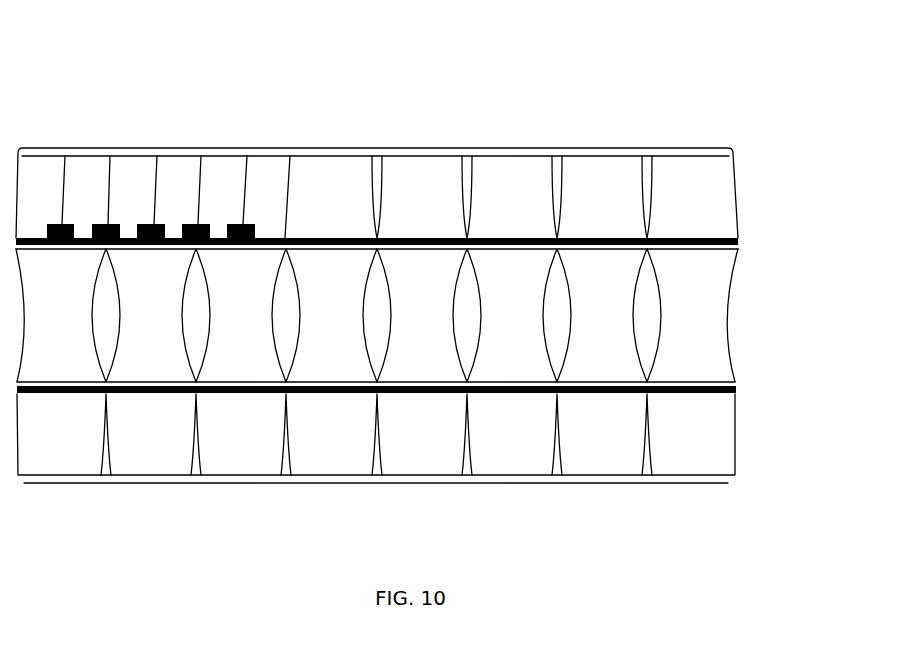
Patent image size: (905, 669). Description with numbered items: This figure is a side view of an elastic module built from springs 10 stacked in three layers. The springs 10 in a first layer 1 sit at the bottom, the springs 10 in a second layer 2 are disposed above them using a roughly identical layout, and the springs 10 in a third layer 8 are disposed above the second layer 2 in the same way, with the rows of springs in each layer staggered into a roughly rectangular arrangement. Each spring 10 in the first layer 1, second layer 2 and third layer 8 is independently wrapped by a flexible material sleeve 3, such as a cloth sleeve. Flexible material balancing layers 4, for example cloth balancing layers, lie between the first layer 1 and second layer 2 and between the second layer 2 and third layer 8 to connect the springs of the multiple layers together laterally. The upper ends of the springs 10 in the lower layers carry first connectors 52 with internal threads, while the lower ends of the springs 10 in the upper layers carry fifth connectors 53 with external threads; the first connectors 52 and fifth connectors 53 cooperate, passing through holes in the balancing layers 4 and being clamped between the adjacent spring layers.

The first layer 1 is at (715, 445).
The second layer 2 is at (723, 330).
The flexible material sleeve 3 is at (310, 191).
The flexible material balancing layer 4 is at (738, 242).
The third layer 8 is at (708, 213).
The spring 10 is at (427, 195).
The first connector 52 is at (107, 243).
The fifth connector 53 is at (68, 224).